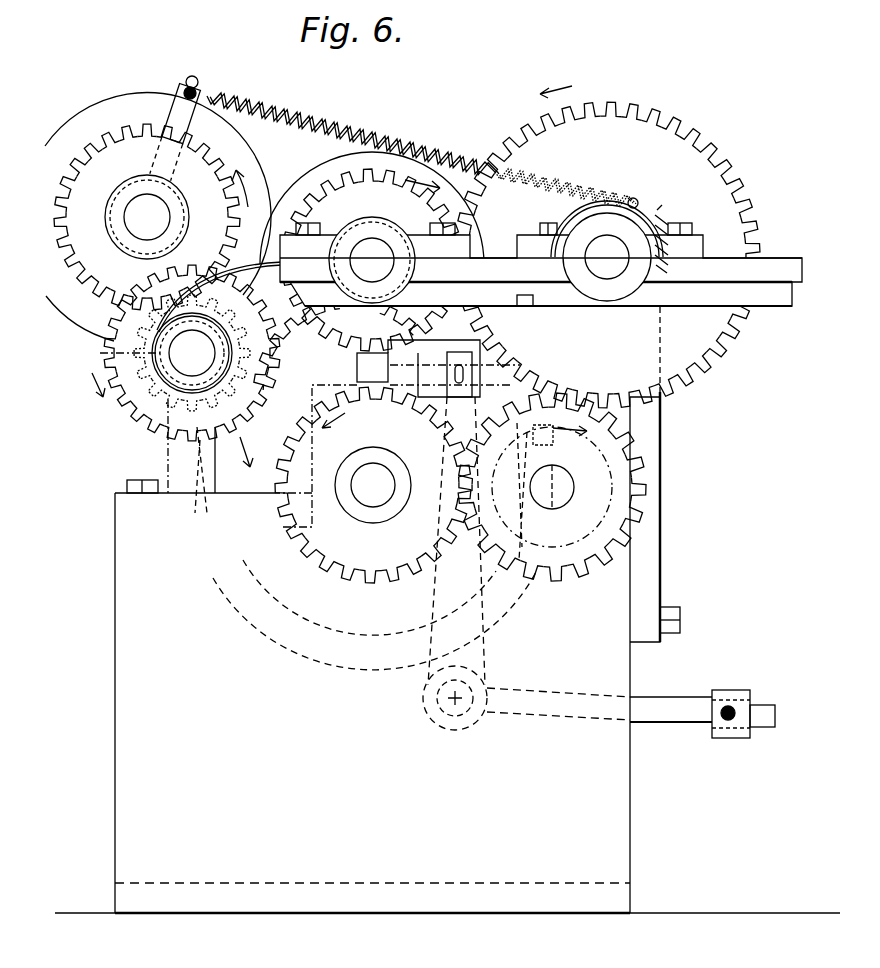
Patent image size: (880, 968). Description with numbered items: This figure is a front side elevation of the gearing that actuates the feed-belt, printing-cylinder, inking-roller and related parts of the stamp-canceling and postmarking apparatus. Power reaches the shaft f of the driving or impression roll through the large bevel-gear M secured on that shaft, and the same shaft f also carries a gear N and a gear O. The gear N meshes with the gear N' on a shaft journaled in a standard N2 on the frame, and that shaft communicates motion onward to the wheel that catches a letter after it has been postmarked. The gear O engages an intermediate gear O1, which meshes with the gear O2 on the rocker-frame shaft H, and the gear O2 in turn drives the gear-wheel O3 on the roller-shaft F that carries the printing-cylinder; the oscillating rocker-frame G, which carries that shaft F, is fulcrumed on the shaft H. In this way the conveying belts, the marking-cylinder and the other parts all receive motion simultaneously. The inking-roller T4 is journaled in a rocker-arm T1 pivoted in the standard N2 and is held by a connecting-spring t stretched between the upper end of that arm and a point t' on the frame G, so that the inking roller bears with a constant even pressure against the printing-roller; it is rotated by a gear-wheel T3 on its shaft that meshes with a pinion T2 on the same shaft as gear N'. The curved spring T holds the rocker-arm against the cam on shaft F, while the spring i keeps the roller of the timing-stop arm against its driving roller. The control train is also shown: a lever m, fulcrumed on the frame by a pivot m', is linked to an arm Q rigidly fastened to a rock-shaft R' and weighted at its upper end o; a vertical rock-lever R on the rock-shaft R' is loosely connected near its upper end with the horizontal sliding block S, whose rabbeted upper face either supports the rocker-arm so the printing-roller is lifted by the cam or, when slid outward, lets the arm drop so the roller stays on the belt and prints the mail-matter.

The inking-roller T4 is at (98, 113).
The gear-wheel T3 is at (147, 217).
The rocker-arm T1 is at (175, 128).
The pinion T2 is at (150, 411).
The curved spring T is at (219, 284).
The connecting-spring t is at (421, 146).
The point on the frame t' is at (642, 205).
The spring i is at (664, 234).
The gear N is at (195, 353).
The gear N' is at (151, 470).
The standard N2 is at (172, 472).
The bevel-gear M is at (336, 344).
The lever m is at (374, 618).
The pivot m' is at (550, 491).
The gear-wheel O3 is at (372, 254).
The gear O2 is at (728, 319).
The intermediate gear O1 is at (566, 571).
The gear O is at (373, 485).
The transverse shaft F is at (372, 260).
The rocker-frame G is at (486, 267).
The transverse shaft H is at (607, 251).
The shaft f is at (373, 485).
The sliding block S is at (334, 440).
The rock-lever R is at (454, 512).
The rock-shaft R' is at (526, 711).
The arm Q is at (657, 705).
The weighted upper end o is at (735, 699).